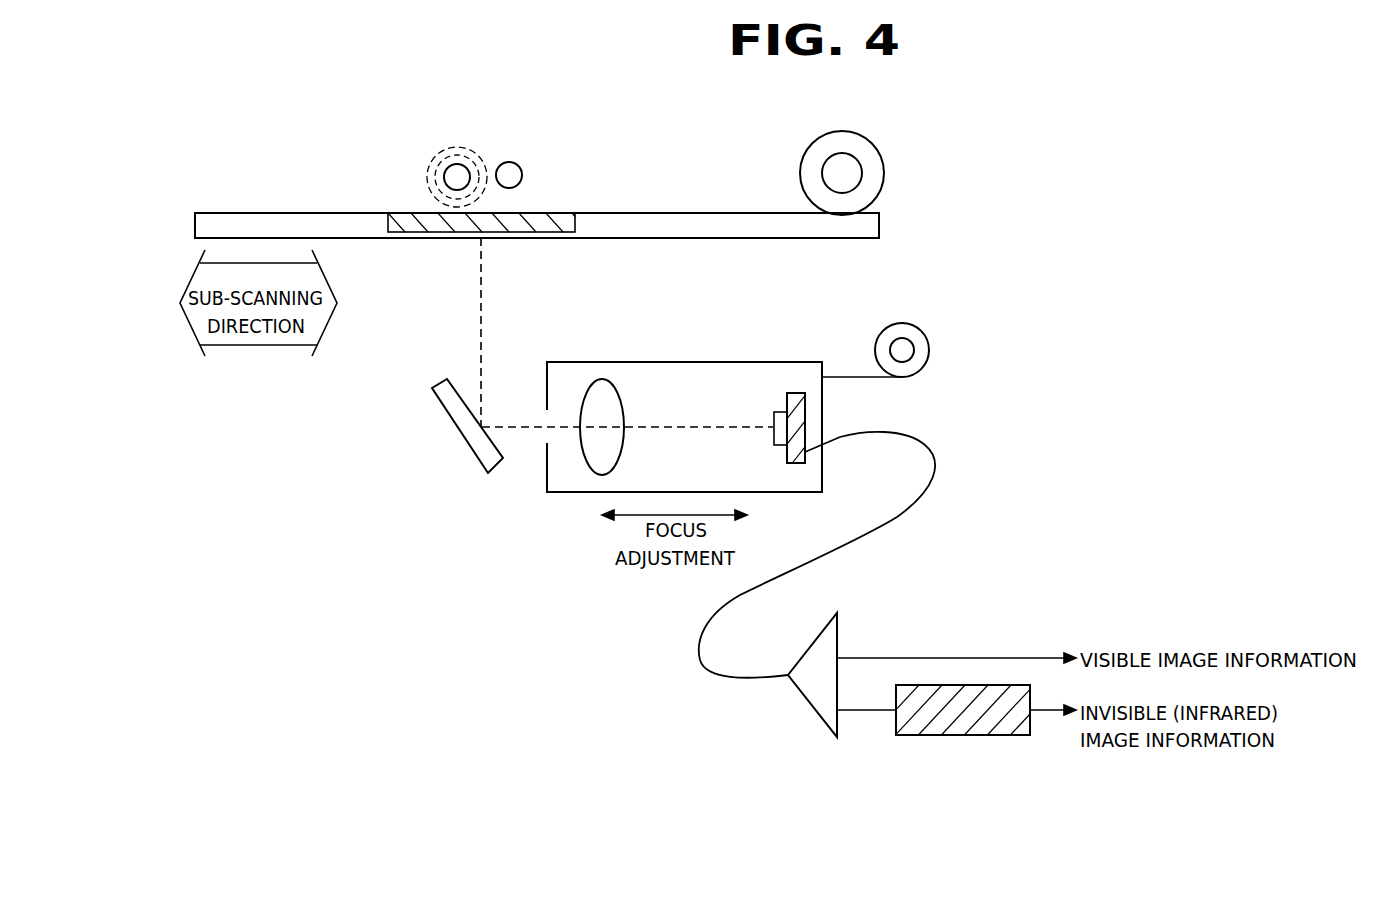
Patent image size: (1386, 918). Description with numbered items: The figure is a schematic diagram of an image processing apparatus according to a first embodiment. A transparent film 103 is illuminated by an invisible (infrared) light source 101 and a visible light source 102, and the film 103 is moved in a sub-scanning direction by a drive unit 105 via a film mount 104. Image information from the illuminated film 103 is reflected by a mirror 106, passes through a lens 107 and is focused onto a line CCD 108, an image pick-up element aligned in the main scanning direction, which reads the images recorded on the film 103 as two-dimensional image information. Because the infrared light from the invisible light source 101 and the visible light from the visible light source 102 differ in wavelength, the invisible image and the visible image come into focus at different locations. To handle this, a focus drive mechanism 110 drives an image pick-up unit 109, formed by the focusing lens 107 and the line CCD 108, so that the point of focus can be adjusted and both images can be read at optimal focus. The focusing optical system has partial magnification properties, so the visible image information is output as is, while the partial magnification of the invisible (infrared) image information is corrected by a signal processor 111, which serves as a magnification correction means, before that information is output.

The invisible (infrared) light source 101 is at (456, 148).
The visible light source 102 is at (512, 163).
The transparent film 103 is at (565, 214).
The film mount 104 is at (672, 213).
The drive unit 105 is at (882, 193).
The mirror 106 is at (468, 453).
The lens 107 is at (606, 380).
The line CCD 108 is at (797, 390).
The image pick-up unit 109 is at (697, 362).
The focus drive mechanism 110 is at (922, 323).
The signal processor 111 is at (963, 738).